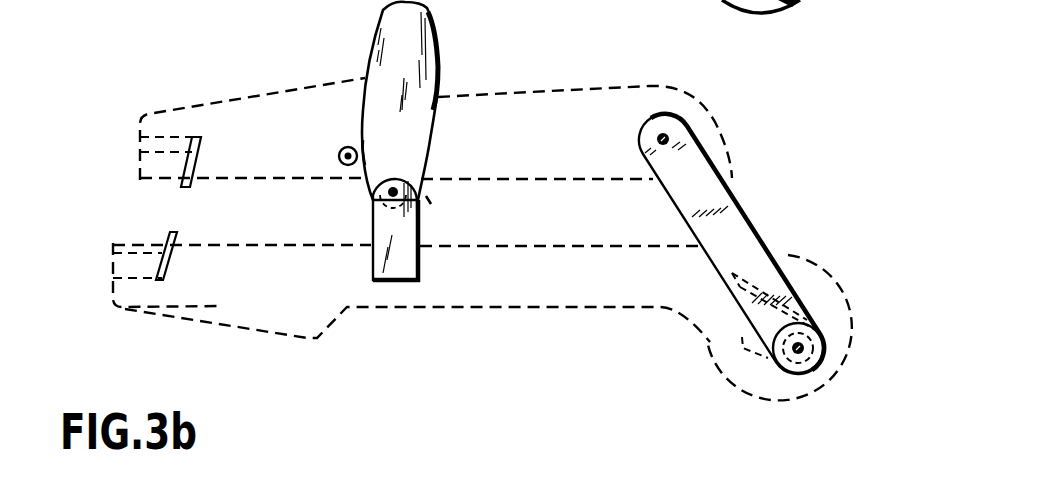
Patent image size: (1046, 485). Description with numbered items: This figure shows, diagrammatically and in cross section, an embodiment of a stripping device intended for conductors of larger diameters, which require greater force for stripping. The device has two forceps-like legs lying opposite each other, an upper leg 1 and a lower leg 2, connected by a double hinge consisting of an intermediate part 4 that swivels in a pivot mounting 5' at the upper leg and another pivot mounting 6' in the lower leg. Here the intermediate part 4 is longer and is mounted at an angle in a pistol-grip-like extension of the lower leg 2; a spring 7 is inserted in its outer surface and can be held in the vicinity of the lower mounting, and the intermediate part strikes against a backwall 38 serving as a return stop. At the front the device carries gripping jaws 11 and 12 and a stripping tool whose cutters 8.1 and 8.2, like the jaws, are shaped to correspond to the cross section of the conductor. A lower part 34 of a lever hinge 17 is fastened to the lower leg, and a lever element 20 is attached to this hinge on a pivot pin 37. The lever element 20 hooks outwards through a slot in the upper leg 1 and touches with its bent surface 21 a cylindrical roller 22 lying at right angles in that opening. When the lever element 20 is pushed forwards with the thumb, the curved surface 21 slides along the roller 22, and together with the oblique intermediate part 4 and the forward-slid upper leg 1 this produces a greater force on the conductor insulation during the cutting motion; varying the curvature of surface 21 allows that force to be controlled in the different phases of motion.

The upper leg 1 is at (528, 96).
The lower leg 2 is at (597, 283).
The intermediate part 4 is at (677, 193).
The pivot mounting 5' is at (628, 130).
The pivot mounting 6' is at (826, 348).
The spring 7 is at (734, 280).
The cutter 8.1 is at (188, 187).
The cutter 8.2 is at (175, 232).
The gripping jaw 11 is at (150, 167).
The gripping jaw 12 is at (132, 243).
The lever hinge 17 is at (429, 198).
The lever element 20 is at (434, 30).
The bent surface 21 is at (359, 146).
The cylindrical roller 22 is at (338, 158).
The lower part of lever hinge 34 is at (410, 262).
The pivot pin 37 is at (372, 193).
The backwall 38 is at (833, 290).